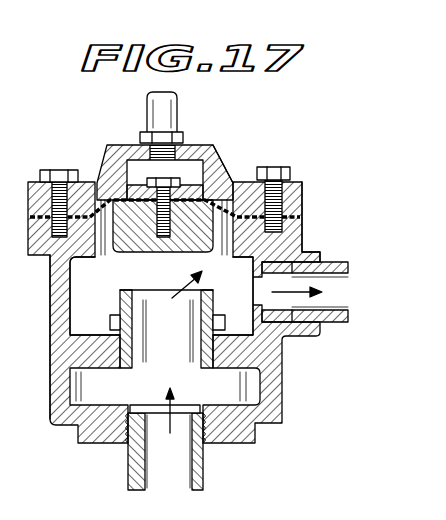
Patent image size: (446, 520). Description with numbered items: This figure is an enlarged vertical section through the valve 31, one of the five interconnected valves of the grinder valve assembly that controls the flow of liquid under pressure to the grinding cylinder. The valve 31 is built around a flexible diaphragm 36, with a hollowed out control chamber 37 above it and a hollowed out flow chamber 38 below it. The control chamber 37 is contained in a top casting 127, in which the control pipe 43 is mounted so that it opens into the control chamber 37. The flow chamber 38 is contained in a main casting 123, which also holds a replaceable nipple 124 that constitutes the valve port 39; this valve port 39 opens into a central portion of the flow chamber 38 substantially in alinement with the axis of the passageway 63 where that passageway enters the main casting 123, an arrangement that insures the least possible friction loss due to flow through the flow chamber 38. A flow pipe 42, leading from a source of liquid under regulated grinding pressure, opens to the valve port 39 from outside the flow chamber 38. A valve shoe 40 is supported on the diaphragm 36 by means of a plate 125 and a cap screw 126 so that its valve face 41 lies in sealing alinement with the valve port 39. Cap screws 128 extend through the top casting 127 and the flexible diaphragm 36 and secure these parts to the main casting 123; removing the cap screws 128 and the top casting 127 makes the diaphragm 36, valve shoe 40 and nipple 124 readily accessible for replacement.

The valve 31 is at (50, 279).
The flexible diaphragm 36 is at (244, 174).
The control chamber 37 is at (136, 166).
The flow chamber 38 is at (70, 327).
The valve port 39 is at (150, 300).
The valve shoe 40 is at (200, 247).
The valve face 41 is at (127, 256).
The flow pipe 42 is at (130, 484).
The control pipe 43 is at (183, 117).
The passageway 63 is at (342, 322).
The main casting 123 is at (62, 357).
The replaceable nipple 124 is at (211, 296).
The plate 125 is at (218, 176).
The cap screw 126 is at (185, 180).
The top casting 127 is at (302, 197).
The cap screws 128 is at (54, 176).